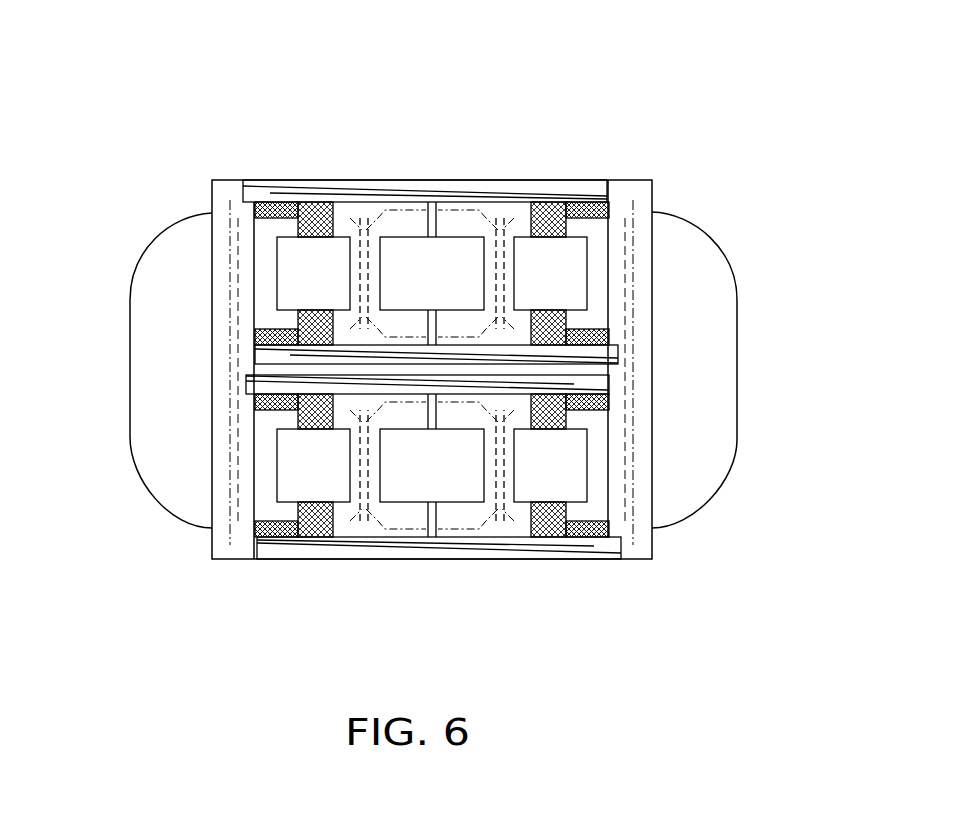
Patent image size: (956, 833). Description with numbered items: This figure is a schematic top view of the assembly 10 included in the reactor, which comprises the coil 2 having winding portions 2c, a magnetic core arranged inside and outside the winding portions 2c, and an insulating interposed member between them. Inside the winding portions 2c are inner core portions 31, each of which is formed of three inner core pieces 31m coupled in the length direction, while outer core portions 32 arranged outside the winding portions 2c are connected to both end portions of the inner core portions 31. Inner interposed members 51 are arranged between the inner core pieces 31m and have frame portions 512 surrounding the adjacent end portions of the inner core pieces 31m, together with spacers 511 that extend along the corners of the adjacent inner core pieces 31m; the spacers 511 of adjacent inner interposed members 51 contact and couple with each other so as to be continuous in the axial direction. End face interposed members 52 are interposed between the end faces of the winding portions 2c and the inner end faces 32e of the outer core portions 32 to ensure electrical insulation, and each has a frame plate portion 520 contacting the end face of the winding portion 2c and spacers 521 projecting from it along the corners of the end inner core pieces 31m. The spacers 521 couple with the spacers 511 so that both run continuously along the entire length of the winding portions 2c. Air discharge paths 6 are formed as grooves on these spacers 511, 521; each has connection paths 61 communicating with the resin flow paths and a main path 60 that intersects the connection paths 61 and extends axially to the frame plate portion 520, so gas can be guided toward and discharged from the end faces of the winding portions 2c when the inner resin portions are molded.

The assembly 10 is at (150, 95).
The coil 2 is at (433, 452).
The winding portion 2c is at (308, 196).
The inner core portion 31 is at (555, 115).
The inner core piece 31m is at (338, 250).
The inner interposed member 51 is at (362, 222).
The spacer 511 is at (358, 425).
The frame portion 512 is at (392, 484).
The end face interposed member 52 is at (208, 190).
The frame plate portion 520 is at (232, 195).
The spacer 521 is at (281, 205).
The outer core portion 32 is at (136, 322).
The inner end face 32e is at (210, 552).
The air discharge path 6 is at (253, 398).
The main path 60 is at (302, 538).
The connection path 61 is at (327, 537).